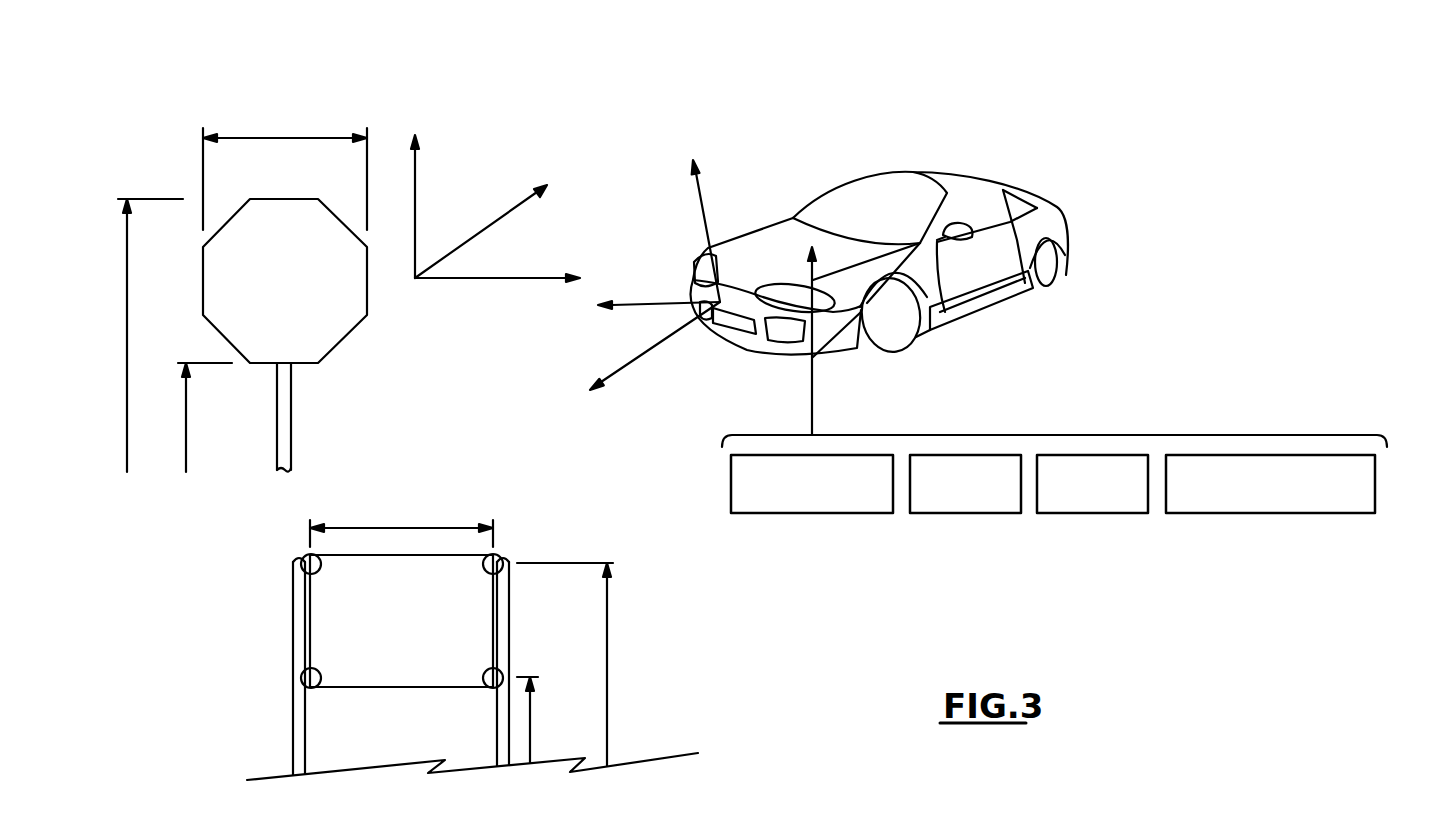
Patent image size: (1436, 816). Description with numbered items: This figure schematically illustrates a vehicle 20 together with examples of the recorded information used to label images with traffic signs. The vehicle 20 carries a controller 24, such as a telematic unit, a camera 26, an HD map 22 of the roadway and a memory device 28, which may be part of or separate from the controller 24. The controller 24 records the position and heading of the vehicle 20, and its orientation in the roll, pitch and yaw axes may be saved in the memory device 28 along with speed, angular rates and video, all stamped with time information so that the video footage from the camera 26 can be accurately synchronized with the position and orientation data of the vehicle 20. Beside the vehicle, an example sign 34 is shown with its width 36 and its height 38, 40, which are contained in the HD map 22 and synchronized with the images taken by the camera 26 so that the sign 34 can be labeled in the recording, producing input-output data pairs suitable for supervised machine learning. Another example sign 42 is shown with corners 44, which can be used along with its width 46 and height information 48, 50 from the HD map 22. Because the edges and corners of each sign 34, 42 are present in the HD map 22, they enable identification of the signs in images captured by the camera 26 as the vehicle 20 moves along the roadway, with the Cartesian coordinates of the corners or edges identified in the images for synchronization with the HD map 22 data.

The vehicle 20 is at (963, 183).
The HD map 22 is at (1089, 513).
The controller 24 is at (783, 513).
The camera 26 is at (962, 513).
The memory device 28 is at (1217, 513).
The sign 34 is at (432, 91).
The width 36 is at (266, 137).
The height 38 is at (127, 295).
The height 40 is at (186, 430).
The sign 42 is at (333, 646).
The corners 44 is at (306, 556).
The width 46 is at (388, 525).
The height information 48 is at (607, 656).
The height information 50 is at (530, 727).